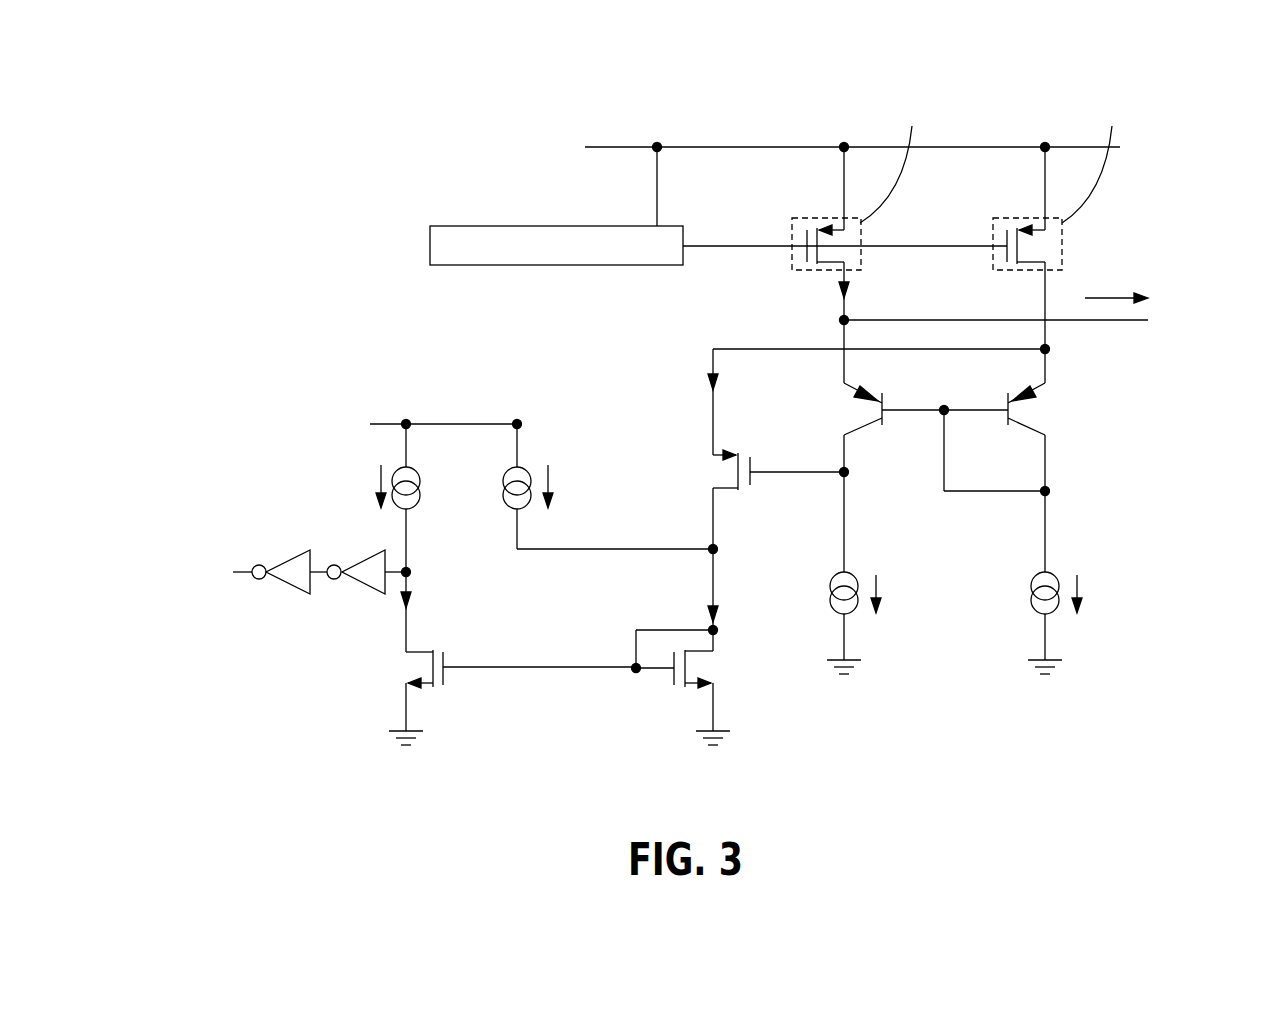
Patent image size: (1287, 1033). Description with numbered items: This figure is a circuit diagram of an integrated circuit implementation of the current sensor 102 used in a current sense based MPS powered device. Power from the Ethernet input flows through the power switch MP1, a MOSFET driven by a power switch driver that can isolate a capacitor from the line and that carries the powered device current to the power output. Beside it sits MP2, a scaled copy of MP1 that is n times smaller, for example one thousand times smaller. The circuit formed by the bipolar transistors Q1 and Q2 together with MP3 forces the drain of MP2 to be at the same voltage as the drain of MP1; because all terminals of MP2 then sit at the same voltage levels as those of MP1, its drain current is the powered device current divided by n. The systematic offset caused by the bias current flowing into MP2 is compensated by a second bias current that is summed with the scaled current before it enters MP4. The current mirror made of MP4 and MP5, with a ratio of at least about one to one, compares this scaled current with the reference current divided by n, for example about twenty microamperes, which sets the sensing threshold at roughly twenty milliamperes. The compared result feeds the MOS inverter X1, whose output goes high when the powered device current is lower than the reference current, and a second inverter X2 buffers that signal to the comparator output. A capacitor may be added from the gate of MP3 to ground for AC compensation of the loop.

The current sensor 102 is at (768, 60).
The power switch MP1 is at (866, 208).
The scaled version of MP1 MP2 is at (1067, 208).
The transistor MP3 is at (778, 479).
The current mirror transistor MP4 is at (709, 686).
The current mirror transistor MP5 is at (521, 680).
The transistor Q1 is at (1015, 420).
The transistor Q2 is at (894, 420).
The MOS inverter X1 is at (357, 561).
The inverter X2 is at (284, 561).